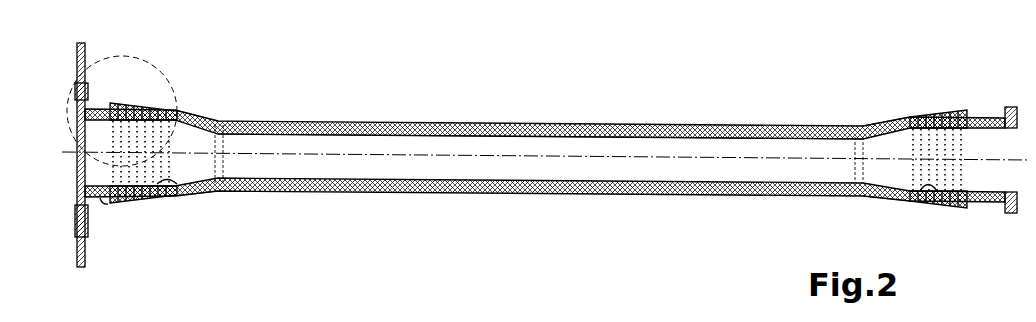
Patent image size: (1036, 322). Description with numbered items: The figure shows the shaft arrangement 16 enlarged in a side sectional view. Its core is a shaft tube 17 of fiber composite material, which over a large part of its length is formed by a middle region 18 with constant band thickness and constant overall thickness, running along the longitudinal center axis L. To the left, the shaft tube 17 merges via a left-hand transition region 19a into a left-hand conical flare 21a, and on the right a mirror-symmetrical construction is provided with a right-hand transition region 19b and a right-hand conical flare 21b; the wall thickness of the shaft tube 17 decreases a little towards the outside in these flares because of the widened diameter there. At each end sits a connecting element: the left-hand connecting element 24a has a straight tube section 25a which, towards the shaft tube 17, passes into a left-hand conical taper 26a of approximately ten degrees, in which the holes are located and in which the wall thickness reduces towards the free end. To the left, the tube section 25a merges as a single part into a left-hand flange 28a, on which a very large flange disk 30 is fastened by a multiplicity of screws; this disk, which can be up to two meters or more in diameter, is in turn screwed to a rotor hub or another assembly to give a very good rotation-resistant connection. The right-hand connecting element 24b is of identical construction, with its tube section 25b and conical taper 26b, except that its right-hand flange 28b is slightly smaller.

The shaft arrangement 16 is at (545, 122).
The shaft tube 17 is at (374, 128).
The middle region 18 is at (497, 104).
The left-hand transition region 19a is at (234, 104).
The right-hand transition region 19b is at (860, 112).
The left-hand conical flare 21a is at (196, 103).
The right-hand conical flare 21b is at (885, 104).
The left-hand connecting element 24a is at (100, 76).
The right-hand connecting element 24b is at (980, 105).
The straight tube section 25a is at (124, 217).
The straight tube section 25b is at (980, 206).
The left-hand conical taper 26a is at (200, 192).
The right-hand conical taper 26b is at (915, 198).
The left-hand flange 28a is at (85, 222).
The right-hand flange 28b is at (1013, 213).
The flange disk 30 is at (85, 250).
The longitudinal center axis L is at (503, 158).